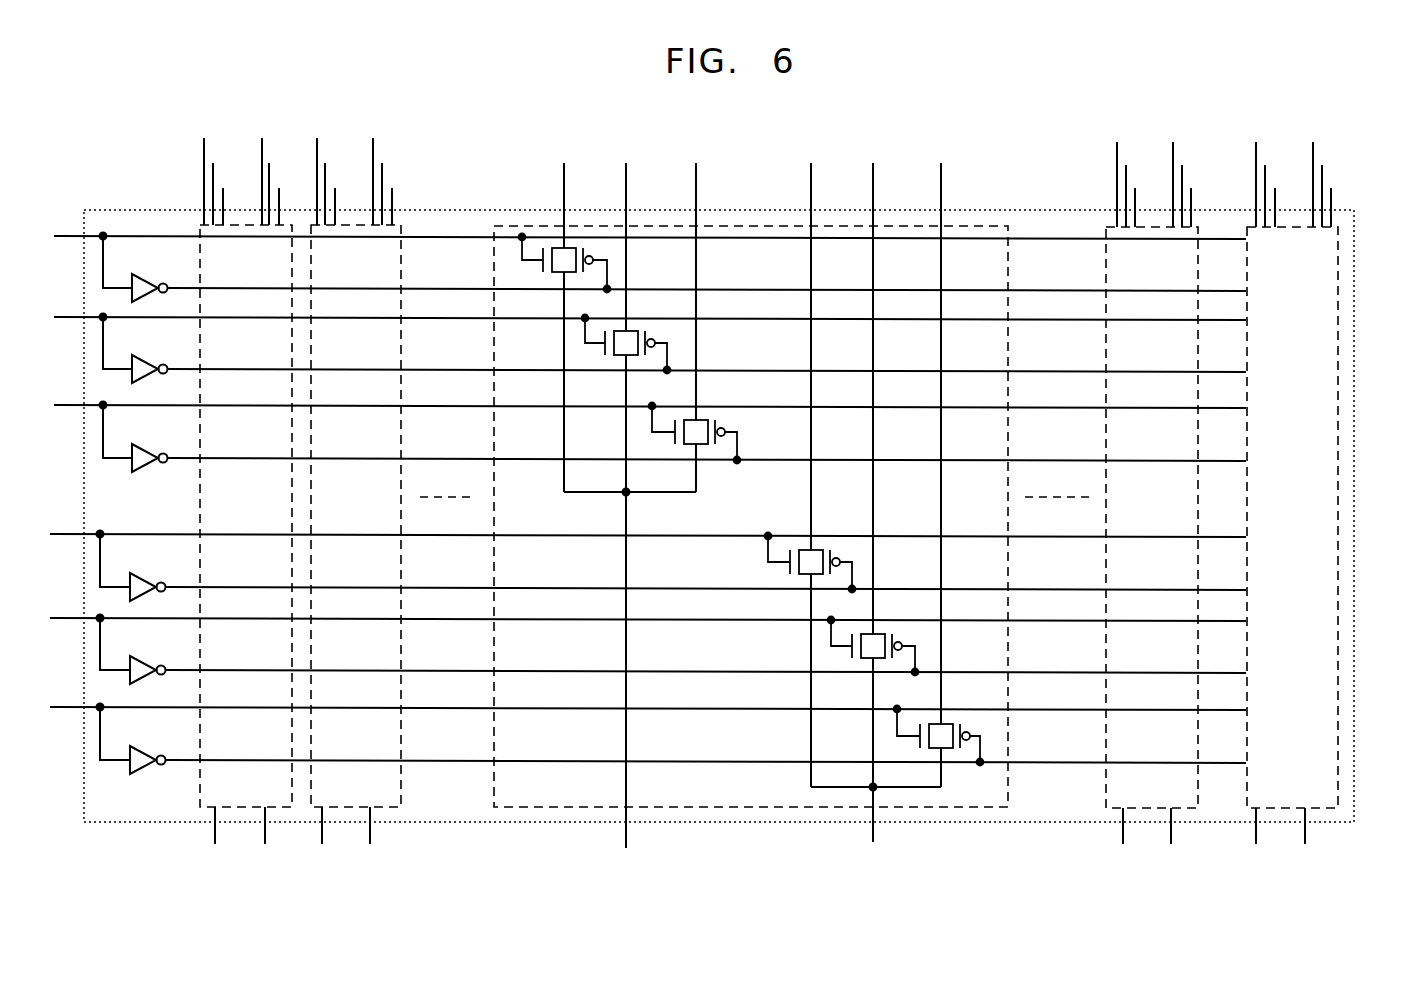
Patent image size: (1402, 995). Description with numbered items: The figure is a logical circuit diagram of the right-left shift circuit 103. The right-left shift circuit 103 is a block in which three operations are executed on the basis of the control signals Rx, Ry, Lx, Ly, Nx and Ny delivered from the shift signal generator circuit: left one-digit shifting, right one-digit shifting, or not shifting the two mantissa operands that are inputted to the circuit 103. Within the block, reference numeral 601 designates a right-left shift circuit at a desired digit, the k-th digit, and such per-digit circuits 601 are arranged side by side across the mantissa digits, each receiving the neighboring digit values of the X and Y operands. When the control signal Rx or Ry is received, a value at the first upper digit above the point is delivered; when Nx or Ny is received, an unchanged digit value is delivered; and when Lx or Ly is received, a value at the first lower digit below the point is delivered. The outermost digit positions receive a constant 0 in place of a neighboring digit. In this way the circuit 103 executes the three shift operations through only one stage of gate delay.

The right-left shift circuit 103 is at (1358, 216).
The right-left shift circuit at a desired digit 601 is at (196, 797).
The constant zero input 0 is at (773, 172).